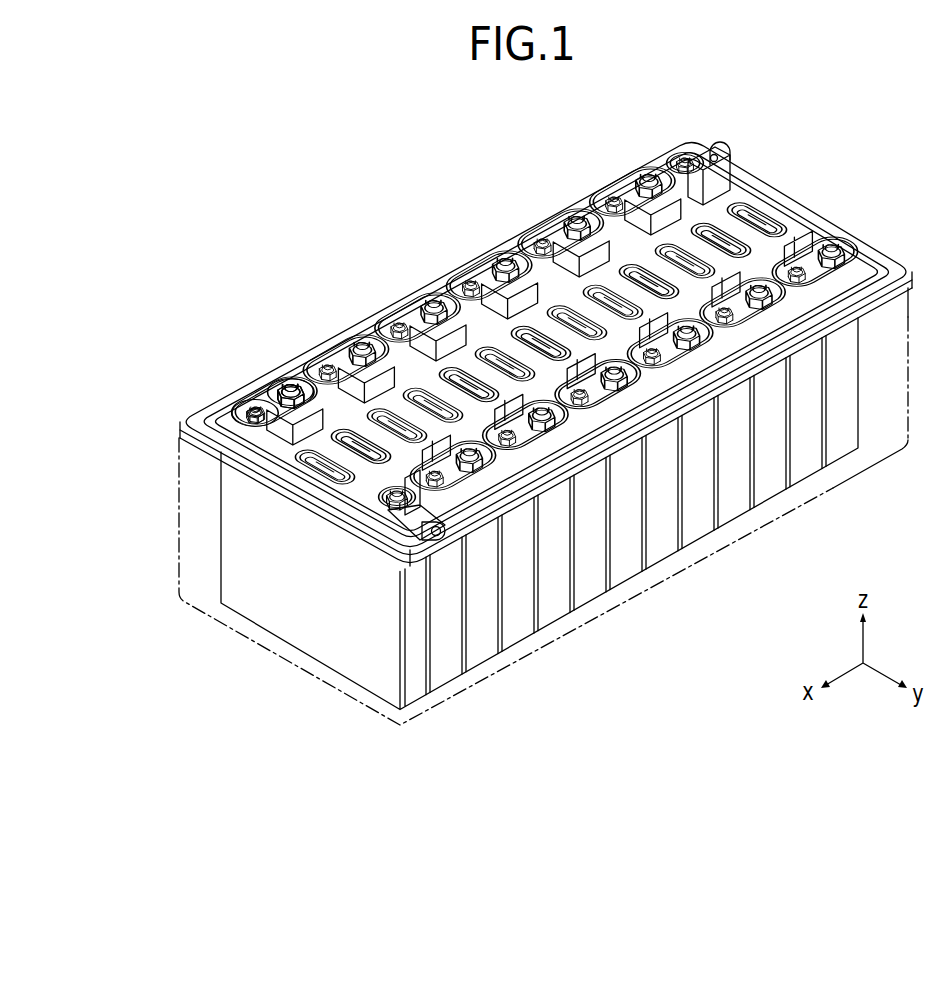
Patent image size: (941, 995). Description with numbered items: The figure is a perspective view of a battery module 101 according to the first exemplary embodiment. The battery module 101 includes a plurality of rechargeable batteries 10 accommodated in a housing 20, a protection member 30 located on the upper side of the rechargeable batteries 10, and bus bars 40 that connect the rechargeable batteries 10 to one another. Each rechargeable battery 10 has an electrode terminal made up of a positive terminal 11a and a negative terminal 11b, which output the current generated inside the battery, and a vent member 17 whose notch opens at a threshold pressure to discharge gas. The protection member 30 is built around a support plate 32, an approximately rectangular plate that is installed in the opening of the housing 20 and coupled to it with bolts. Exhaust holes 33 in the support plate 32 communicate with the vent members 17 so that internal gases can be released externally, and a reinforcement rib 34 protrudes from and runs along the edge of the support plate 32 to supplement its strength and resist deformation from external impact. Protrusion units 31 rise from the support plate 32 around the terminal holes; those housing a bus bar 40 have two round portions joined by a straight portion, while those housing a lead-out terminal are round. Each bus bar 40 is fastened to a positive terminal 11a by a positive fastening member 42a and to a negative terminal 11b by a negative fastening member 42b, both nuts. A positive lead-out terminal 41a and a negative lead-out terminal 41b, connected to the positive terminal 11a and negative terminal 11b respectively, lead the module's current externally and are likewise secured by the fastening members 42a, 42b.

The battery module 101 is at (440, 150).
The rechargeable battery 10 is at (583, 580).
The positive terminal 11a is at (680, 160).
The negative terminal 11b is at (289, 396).
The vent member 17 is at (300, 452).
The housing 20 is at (664, 580).
The protection member 30 is at (436, 276).
The protrusion unit 31 is at (668, 153).
The support plate 32 is at (782, 193).
The exhaust hole 33 is at (315, 475).
The reinforcement rib 34 is at (215, 441).
The bus bar 40 is at (270, 403).
The positive lead-out terminal 41a is at (730, 150).
The negative lead-out terminal 41b is at (433, 536).
The positive fastening member 42a is at (682, 157).
The negative fastening member 42b is at (291, 382).